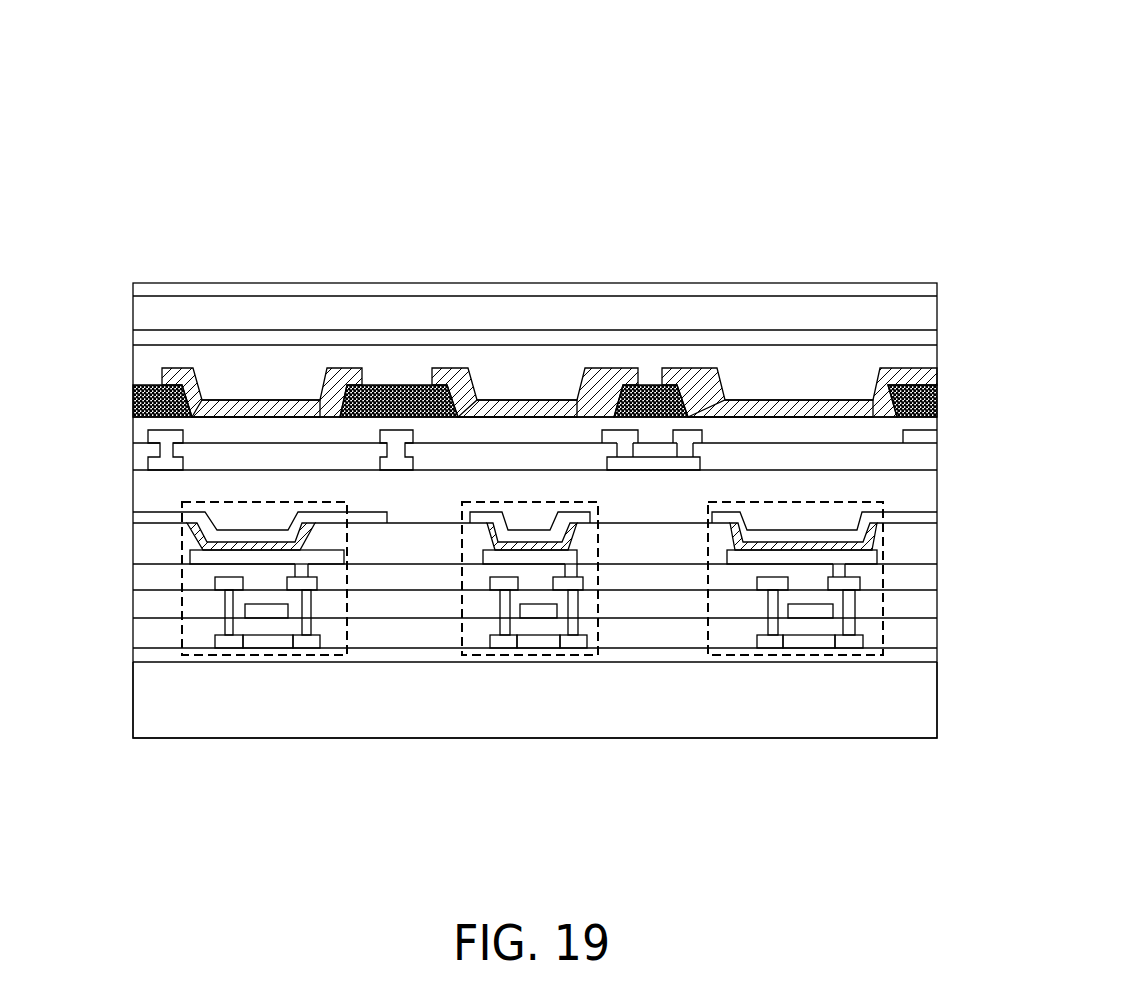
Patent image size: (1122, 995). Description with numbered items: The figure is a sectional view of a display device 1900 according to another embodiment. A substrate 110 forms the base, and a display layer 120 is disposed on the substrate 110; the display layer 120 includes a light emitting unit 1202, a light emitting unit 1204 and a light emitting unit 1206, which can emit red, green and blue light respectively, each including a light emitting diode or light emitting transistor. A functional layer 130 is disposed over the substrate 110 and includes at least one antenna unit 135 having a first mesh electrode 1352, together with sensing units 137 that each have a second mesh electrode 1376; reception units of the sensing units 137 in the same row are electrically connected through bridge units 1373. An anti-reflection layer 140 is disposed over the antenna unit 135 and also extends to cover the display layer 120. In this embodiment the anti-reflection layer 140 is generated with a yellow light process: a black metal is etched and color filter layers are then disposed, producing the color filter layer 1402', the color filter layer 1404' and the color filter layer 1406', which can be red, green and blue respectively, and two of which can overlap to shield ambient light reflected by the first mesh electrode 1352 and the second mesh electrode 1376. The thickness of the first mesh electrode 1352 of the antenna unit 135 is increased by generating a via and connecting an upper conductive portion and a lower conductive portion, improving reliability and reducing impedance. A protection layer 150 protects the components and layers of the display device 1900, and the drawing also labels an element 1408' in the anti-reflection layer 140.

The display device 1900 is at (803, 85).
The substrate 110 is at (432, 713).
The display layer 120 is at (495, 647).
The light emitting unit 1202 is at (255, 657).
The light emitting unit 1204 is at (540, 657).
The light emitting unit 1206 is at (795, 647).
The functional layer 130 is at (495, 329).
The sensing unit 137 is at (549, 302).
The bridge unit 1373 is at (658, 463).
The second mesh electrode 1376 is at (683, 433).
The antenna unit 135 is at (535, 303).
The first mesh electrode 1352 is at (167, 432).
The anti-reflection layer 140 is at (495, 302).
The color filter layer 1402' is at (256, 320).
The color filter layer 1404' is at (529, 321).
The color filter layer 1406' is at (780, 321).
The pixel electrode 1408' is at (391, 347).
The protection layer 150 is at (123, 283).